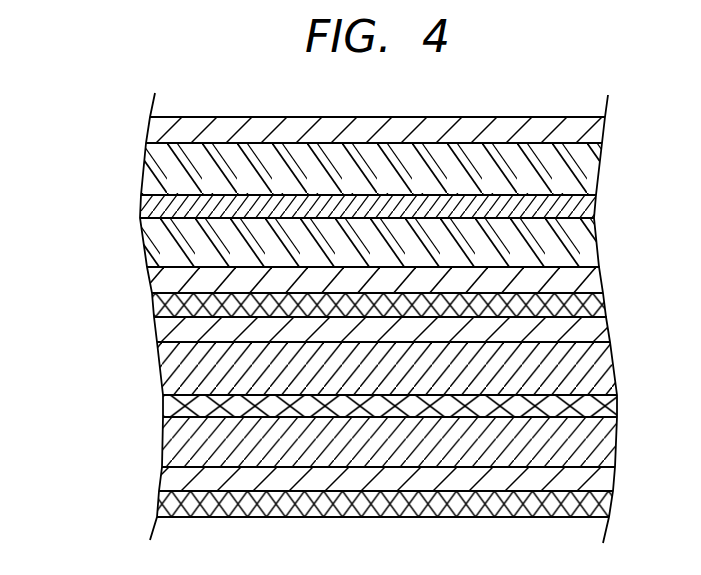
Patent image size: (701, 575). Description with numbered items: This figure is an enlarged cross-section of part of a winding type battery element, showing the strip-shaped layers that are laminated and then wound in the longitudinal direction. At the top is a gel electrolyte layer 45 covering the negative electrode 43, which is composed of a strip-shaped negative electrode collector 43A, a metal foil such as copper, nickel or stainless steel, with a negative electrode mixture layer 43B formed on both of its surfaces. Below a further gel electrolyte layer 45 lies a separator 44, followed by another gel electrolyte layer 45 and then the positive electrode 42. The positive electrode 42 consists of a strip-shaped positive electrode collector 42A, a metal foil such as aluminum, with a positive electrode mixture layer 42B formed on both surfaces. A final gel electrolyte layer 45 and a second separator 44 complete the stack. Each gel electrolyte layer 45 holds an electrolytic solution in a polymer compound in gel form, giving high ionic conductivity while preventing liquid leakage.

The positive electrode 42 is at (328, 404).
The positive electrode collector 42A is at (167, 403).
The positive electrode mixture layer 42B is at (167, 364).
The negative electrode 43 is at (330, 205).
The negative electrode collector 43A is at (148, 208).
The negative electrode mixture layer 43B is at (155, 167).
The separator 44 is at (150, 305).
The gel electrolyte layer 45 is at (152, 129).